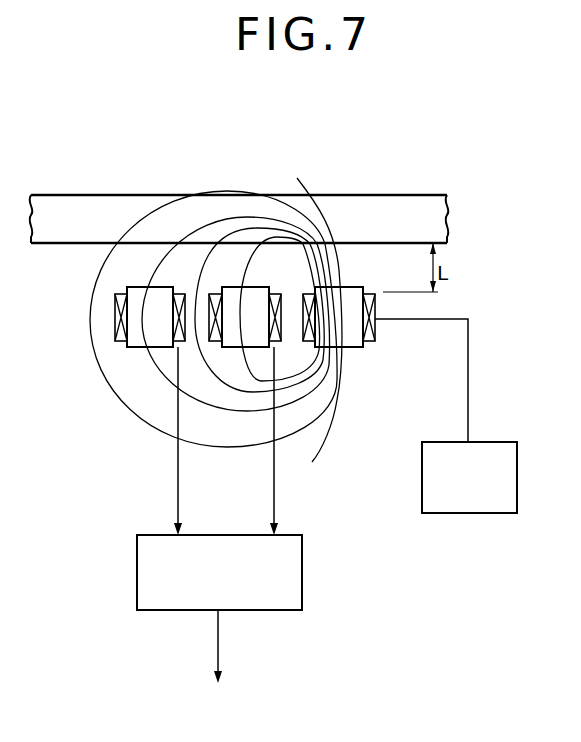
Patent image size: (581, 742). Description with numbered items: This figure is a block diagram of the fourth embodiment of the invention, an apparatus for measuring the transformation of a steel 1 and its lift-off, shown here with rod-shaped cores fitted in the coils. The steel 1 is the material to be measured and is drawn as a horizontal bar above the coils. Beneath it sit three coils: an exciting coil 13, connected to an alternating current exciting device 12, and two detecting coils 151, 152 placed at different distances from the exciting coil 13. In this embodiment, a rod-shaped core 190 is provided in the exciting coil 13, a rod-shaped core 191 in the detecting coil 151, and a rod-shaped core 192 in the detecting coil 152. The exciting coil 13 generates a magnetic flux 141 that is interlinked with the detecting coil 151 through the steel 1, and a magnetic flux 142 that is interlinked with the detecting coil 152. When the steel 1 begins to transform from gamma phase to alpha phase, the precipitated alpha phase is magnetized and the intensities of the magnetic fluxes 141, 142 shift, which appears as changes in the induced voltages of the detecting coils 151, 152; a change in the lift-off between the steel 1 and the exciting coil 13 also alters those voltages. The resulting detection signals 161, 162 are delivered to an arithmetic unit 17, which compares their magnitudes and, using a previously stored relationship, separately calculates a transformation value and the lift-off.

The steel 1 is at (400, 194).
The alternating current exciting device 12 is at (495, 441).
The exciting coil 13 is at (350, 318).
The magnetic flux 141 is at (285, 380).
The magnetic flux 142 is at (197, 401).
The detecting coil 151 is at (243, 320).
The detecting coil 152 is at (147, 320).
The detection signal 161 is at (275, 491).
The detection signal 162 is at (179, 491).
The arithmetic unit 17 is at (303, 573).
The rod-shaped core 190 is at (352, 345).
The rod-shaped core 191 is at (231, 348).
The rod-shaped core 192 is at (120, 281).